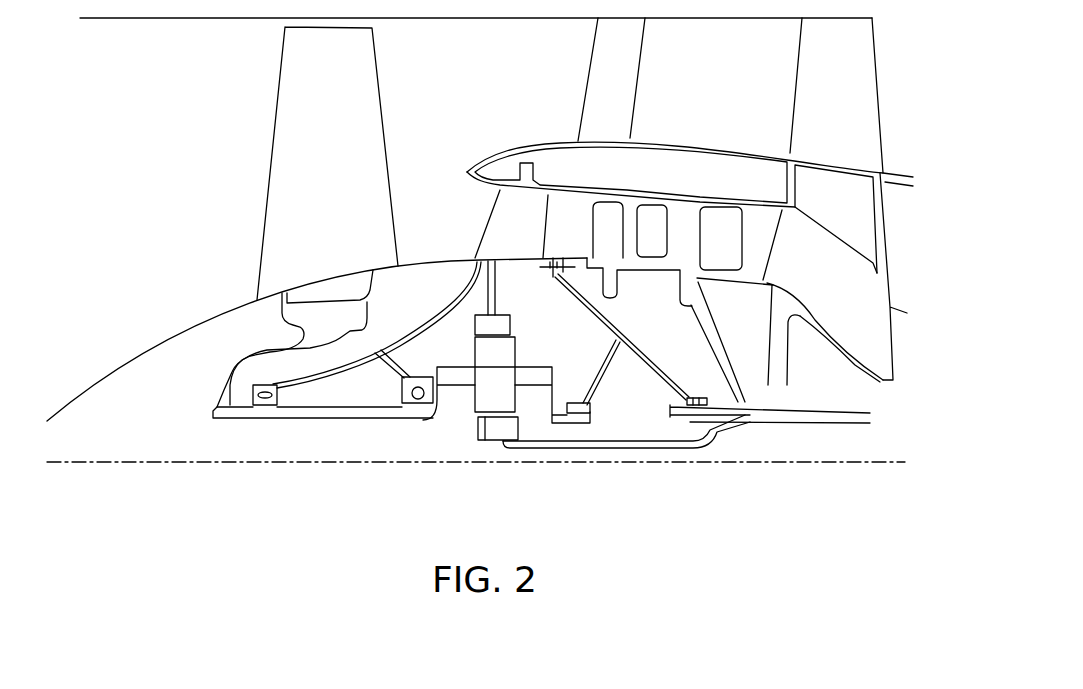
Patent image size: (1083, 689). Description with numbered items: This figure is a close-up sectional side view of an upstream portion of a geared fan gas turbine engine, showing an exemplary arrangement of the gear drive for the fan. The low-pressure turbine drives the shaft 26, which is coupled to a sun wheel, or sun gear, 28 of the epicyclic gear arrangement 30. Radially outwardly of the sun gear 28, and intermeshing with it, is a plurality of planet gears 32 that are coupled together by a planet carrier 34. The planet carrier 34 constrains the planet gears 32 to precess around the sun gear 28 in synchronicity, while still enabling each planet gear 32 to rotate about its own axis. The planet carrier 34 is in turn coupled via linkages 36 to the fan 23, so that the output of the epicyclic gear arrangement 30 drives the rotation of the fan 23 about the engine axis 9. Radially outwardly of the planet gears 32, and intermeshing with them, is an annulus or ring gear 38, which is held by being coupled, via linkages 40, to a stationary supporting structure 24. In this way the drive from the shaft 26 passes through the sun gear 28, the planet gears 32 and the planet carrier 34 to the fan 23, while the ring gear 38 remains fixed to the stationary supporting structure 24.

The engine axis 9 is at (223, 463).
The fan 23 is at (293, 208).
The stationary supporting structure 24 is at (503, 222).
The shaft 26 is at (757, 420).
The sun gear 28 is at (492, 432).
The epicyclic gear arrangement 30 is at (452, 412).
The planet gears 32 is at (472, 407).
The planet carrier 34 is at (547, 410).
The linkages 36 is at (445, 393).
The ring gear 38 is at (475, 325).
The linkages 40 is at (495, 288).